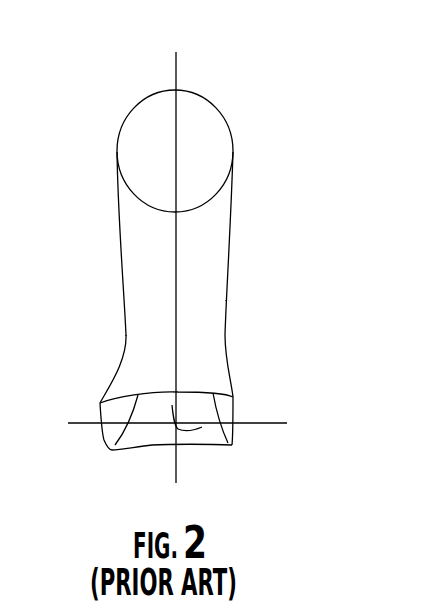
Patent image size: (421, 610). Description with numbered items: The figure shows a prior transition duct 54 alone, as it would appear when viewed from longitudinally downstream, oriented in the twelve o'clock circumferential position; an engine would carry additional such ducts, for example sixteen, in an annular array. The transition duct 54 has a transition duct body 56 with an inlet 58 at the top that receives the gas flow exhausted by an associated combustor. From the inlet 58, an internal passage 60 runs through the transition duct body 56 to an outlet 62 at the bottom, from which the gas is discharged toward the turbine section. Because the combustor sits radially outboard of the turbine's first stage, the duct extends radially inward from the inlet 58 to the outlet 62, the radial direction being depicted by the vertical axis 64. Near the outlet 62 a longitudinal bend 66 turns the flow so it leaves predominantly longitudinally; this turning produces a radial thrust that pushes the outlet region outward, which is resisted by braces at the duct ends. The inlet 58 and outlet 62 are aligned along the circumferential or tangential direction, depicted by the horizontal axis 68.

The transition duct 54 is at (275, 203).
The transition duct body 56 is at (228, 298).
The inlet 58 is at (195, 130).
The internal passage 60 is at (202, 427).
The outlet 62 is at (188, 447).
The axis 64 is at (172, 249).
The longitudinal bend 66 is at (115, 342).
The axis 68 is at (192, 423).